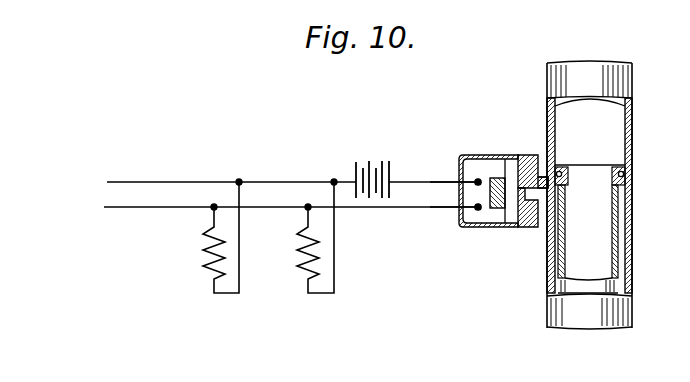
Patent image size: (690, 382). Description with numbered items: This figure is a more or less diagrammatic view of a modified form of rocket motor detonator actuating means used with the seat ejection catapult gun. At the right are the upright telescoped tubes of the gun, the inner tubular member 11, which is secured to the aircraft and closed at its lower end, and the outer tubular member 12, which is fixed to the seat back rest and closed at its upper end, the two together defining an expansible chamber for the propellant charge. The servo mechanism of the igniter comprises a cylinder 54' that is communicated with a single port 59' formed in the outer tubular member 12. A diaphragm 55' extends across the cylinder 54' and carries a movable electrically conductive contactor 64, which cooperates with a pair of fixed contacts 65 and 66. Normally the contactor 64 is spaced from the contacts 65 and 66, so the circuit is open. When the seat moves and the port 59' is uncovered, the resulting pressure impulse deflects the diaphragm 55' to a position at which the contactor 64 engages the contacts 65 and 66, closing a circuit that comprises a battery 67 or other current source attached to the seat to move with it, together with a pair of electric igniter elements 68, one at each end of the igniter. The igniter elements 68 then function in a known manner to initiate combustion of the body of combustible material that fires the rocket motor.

The outer tubular member 12 is at (595, 82).
The inner tubular member 11 is at (618, 227).
The port 59' is at (571, 190).
The battery 67 is at (377, 165).
The fixed contact 65 is at (478, 178).
The fixed contact 66 is at (478, 210).
The cylinder 54' is at (518, 151).
The diaphragm 55' is at (523, 227).
The contactor 64 is at (493, 209).
The electric igniter element 68 is at (207, 278).